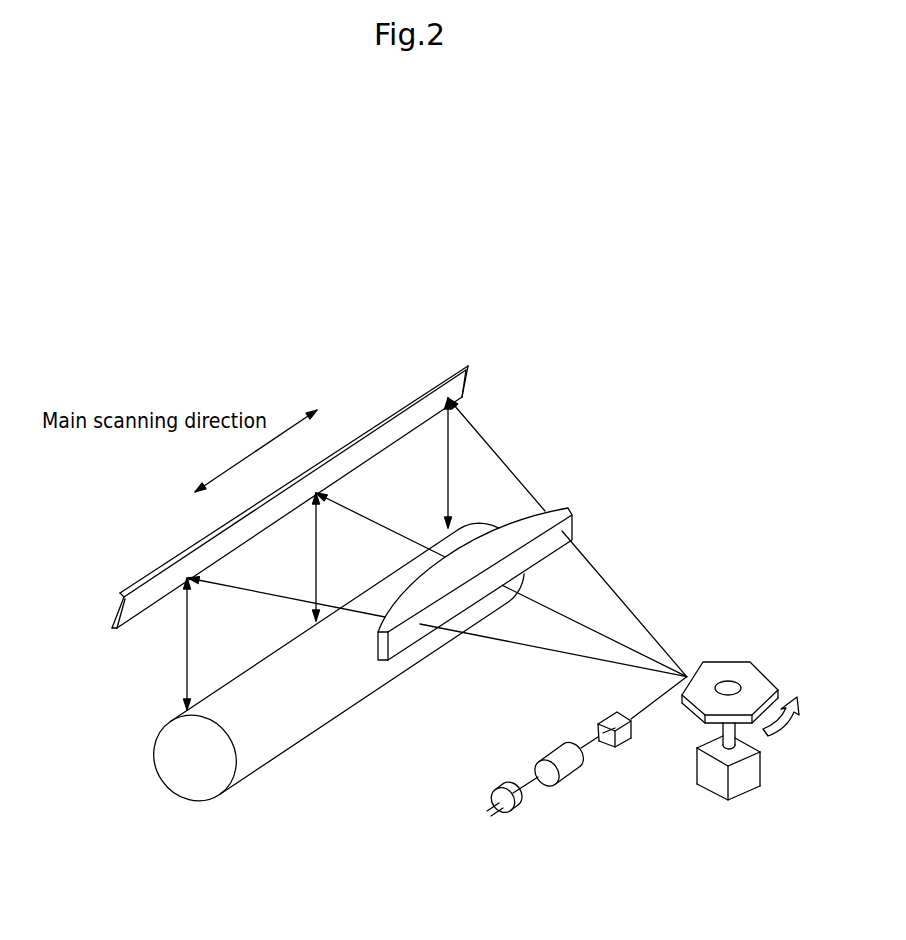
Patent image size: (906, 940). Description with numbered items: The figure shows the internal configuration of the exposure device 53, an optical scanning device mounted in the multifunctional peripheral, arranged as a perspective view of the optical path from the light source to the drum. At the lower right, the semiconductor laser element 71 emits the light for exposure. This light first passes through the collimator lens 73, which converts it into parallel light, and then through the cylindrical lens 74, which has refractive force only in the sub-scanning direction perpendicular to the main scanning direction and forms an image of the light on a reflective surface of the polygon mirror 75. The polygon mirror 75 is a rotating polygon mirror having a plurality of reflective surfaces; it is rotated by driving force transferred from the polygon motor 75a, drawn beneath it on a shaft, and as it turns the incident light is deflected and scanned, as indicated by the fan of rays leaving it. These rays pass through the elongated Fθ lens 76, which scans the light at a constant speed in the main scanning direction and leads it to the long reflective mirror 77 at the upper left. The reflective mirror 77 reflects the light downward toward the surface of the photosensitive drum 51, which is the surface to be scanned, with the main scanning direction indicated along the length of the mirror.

The photosensitive drum 51 is at (198, 790).
The exposure device 53 is at (705, 560).
The semiconductor laser element 71 is at (508, 813).
The collimator lens 73 is at (553, 786).
The cylindrical lens 74 is at (609, 748).
The polygon mirror 75 is at (730, 668).
The polygon motor 75a is at (707, 787).
The Fθ lens 76 is at (575, 525).
The reflective mirror 77 is at (466, 382).